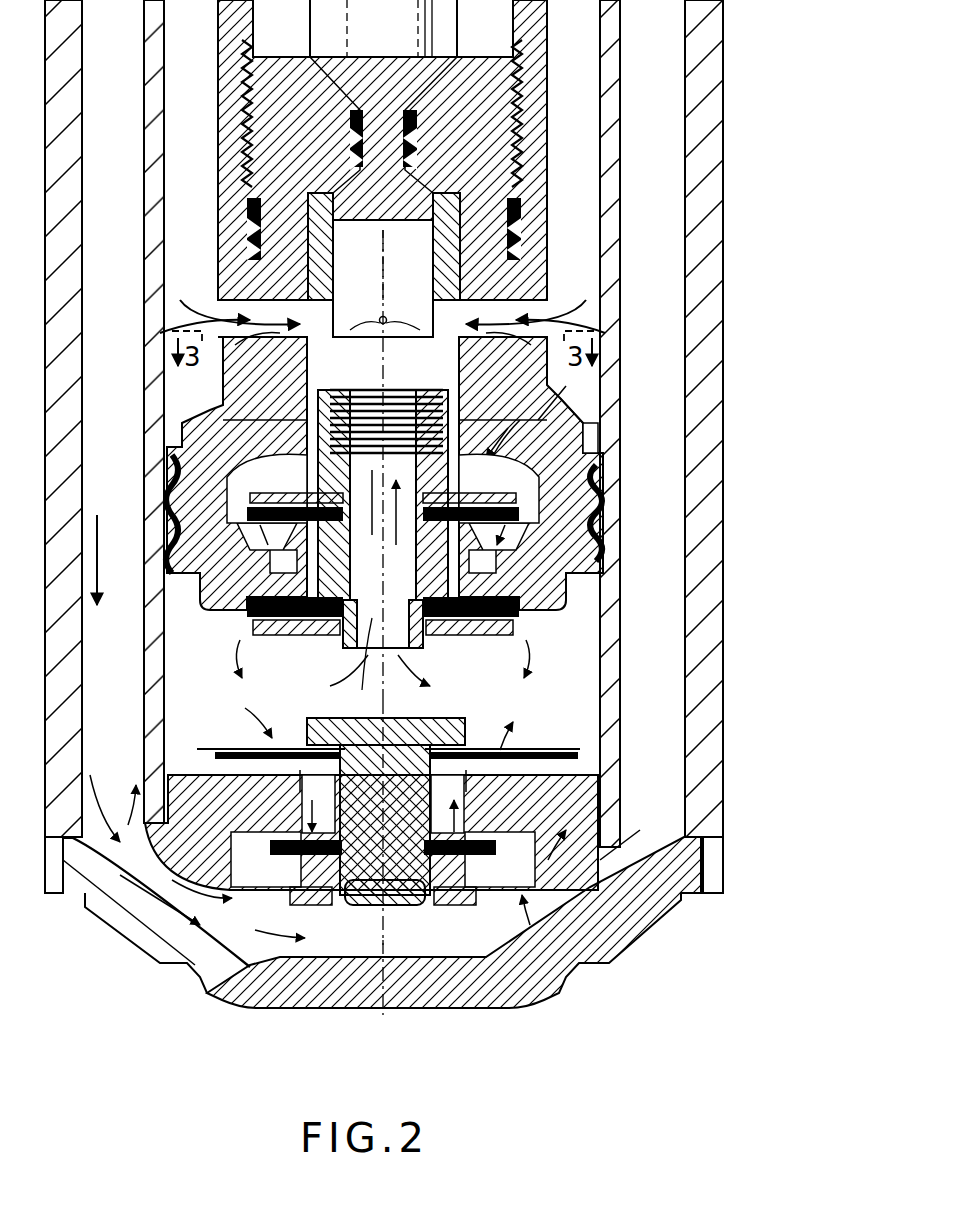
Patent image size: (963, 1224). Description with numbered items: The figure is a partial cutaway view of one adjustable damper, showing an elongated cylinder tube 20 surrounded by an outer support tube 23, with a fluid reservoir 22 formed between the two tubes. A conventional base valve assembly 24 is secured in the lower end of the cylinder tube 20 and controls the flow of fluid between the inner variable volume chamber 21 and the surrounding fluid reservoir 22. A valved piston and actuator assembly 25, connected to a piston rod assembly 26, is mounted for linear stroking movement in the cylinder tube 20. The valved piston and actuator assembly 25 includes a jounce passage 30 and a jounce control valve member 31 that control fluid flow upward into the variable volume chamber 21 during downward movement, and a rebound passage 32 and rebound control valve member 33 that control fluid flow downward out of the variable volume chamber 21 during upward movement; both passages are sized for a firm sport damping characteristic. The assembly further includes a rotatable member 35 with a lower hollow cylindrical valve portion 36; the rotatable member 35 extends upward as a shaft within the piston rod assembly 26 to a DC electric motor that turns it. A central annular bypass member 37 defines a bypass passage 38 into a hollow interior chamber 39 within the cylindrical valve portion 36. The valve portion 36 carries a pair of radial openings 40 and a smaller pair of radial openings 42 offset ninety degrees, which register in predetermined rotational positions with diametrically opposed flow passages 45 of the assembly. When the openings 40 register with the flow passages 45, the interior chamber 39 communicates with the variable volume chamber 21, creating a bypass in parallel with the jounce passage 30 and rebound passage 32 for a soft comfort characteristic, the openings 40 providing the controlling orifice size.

The cylinder tube 20 is at (612, 315).
The variable volume chamber 21 is at (200, 70).
The fluid reservoir 22 is at (660, 375).
The outer support tube 23 is at (722, 410).
The base valve assembly 24 is at (522, 905).
The valved piston and actuator assembly 25 is at (566, 426).
The piston rod assembly 26 is at (548, 115).
The jounce passage 30 is at (545, 565).
The jounce control valve member 31 is at (594, 498).
The rebound passage 32 is at (297, 510).
The rebound control valve member 33 is at (215, 548).
The rotatable member 35 is at (333, 180).
The hollow cylindrical valve portion 36 is at (325, 300).
The central annular bypass member 37 is at (343, 634).
The bypass passage 38 is at (374, 612).
The hollow interior chamber 39 is at (300, 346).
The radial openings 40 is at (383, 312).
The radial openings 42 is at (370, 408).
The flow passages 45 is at (232, 330).